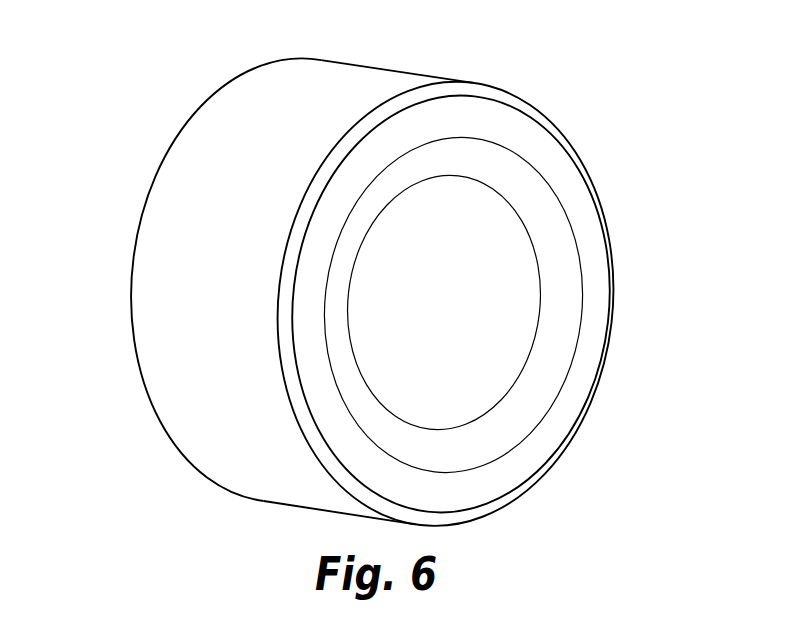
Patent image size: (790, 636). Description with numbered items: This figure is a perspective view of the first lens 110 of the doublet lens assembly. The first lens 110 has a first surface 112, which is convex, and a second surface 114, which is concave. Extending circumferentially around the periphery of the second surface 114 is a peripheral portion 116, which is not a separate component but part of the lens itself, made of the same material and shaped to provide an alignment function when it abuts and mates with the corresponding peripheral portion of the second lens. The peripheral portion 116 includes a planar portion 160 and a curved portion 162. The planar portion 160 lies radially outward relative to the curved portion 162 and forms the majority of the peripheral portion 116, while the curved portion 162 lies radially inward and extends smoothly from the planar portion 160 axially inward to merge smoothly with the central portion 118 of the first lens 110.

The first lens 110 is at (261, 277).
The first surface 112 is at (133, 318).
The second surface 114 is at (329, 348).
The peripheral portion 116 is at (321, 245).
The central portion 118 is at (463, 387).
The planar portion 160 is at (543, 438).
The curved portion 162 is at (533, 368).